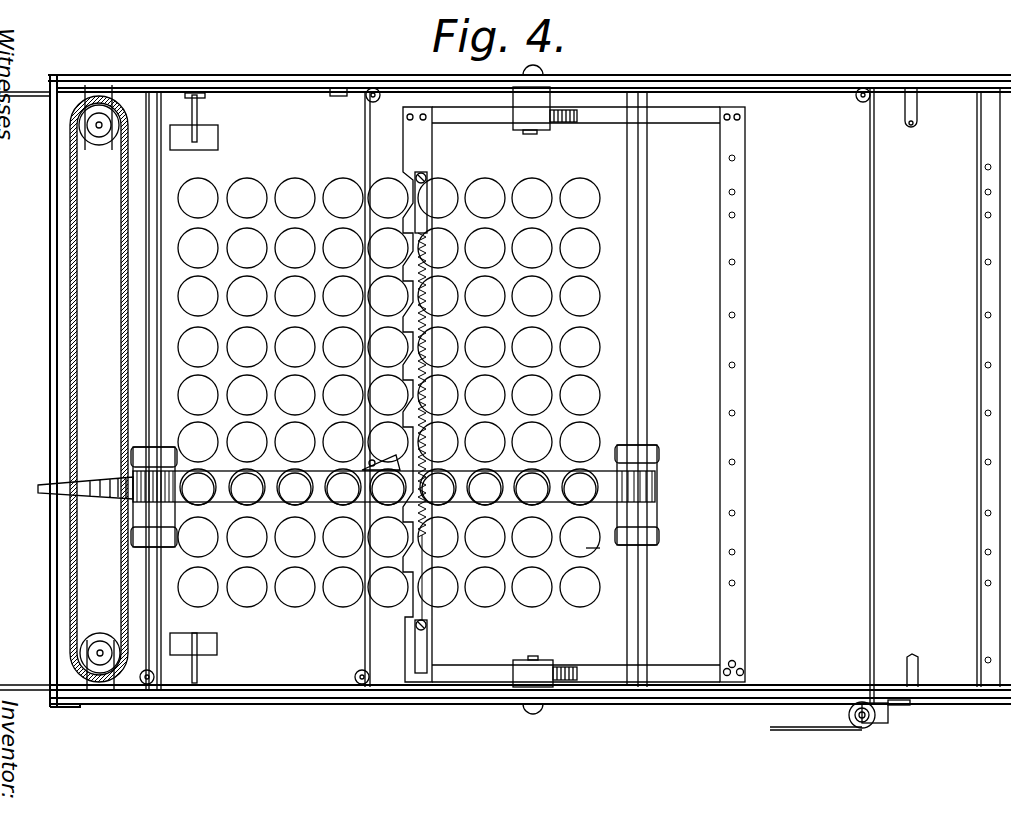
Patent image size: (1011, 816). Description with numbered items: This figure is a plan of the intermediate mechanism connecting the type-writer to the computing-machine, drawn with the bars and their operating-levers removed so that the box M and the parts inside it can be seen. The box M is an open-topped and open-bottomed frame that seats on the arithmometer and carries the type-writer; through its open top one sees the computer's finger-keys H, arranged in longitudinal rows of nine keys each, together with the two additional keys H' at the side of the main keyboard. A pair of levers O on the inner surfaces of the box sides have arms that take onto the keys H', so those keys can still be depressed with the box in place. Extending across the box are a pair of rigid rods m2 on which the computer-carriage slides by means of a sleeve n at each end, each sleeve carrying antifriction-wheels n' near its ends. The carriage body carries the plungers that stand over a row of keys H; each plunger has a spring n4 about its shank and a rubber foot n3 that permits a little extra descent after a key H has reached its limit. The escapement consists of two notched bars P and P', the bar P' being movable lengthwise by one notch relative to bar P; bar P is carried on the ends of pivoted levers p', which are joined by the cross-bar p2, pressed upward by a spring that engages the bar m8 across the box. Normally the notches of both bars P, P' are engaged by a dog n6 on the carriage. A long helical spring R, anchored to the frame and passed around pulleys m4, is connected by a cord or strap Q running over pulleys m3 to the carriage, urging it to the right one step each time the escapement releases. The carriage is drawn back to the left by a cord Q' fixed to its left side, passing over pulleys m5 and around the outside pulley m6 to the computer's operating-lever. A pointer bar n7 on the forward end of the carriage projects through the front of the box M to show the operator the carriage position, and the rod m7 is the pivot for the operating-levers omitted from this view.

The box M is at (52, 338).
The levers O is at (25, 391).
The stems O' is at (210, 389).
The additional keys H' is at (209, 374).
The finger-keys H is at (389, 402).
The helical spring R is at (99, 389).
The rigid rods m2 is at (160, 318).
The pulleys m3 is at (374, 668).
The pulleys m4 is at (100, 143).
The pulleys m5 is at (378, 88).
The pulley m6 is at (863, 730).
The rod m7 is at (917, 656).
The bar m8 is at (977, 560).
The cord or strap Q is at (351, 389).
The cord or strip Q' is at (619, 387).
The notched bar P is at (406, 394).
The notched bar P' is at (440, 413).
The pivoted levers p' is at (576, 387).
The cross-bar p2 is at (720, 334).
The sleeve n is at (405, 496).
The antifriction-wheels n' is at (410, 493).
The rubber projection n3 is at (660, 538).
The springs n4 is at (600, 548).
The dog n6 is at (383, 455).
The pointer bar n7 is at (115, 484).